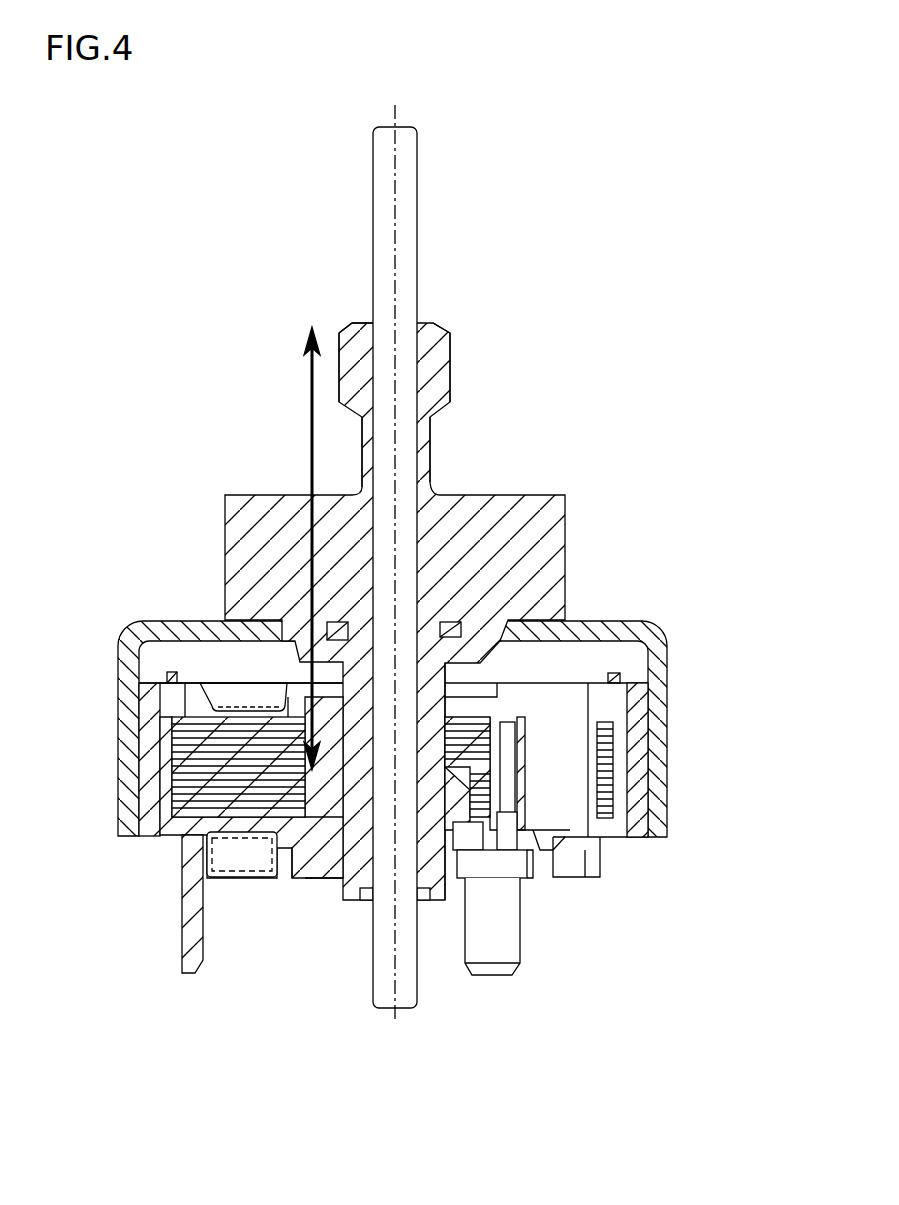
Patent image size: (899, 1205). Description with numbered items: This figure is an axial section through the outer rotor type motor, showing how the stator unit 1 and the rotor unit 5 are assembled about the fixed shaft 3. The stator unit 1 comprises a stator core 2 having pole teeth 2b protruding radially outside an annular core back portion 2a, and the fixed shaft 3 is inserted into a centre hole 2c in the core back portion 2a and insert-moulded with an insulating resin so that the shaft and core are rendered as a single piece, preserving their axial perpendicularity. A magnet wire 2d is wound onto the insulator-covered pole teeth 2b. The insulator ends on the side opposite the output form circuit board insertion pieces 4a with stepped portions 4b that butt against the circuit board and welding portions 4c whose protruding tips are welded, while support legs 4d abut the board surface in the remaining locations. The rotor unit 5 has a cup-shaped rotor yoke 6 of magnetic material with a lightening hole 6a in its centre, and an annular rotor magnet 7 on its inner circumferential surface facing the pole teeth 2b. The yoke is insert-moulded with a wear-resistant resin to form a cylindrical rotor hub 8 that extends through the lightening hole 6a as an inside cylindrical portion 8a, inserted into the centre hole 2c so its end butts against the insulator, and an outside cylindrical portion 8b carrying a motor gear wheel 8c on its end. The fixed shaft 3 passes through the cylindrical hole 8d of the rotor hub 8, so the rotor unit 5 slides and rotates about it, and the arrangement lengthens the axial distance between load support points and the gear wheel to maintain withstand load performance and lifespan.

The stator unit 1 is at (220, 668).
The stator core 2 is at (172, 767).
The core back portion 2a is at (323, 778).
The pole teeth 2b is at (172, 733).
The centre hole 2c is at (441, 745).
The magnet wire 2d is at (208, 700).
The fixed shaft 3 is at (418, 215).
The circuit board insertion pieces 4a is at (188, 974).
The stepped portions 4b is at (525, 880).
The welding portions 4c is at (502, 975).
The support legs 4d is at (310, 876).
The rotor unit 5 is at (212, 422).
The rotor yoke 6 is at (667, 651).
The lightening hole 6a is at (527, 618).
The rotor magnet 7 is at (640, 767).
The rotor hub 8 is at (566, 508).
The inside cylindrical portion 8a is at (445, 717).
The outside cylindrical portion 8b is at (430, 445).
The motor gear wheel 8c is at (450, 347).
The cylindrical hole 8d is at (372, 322).